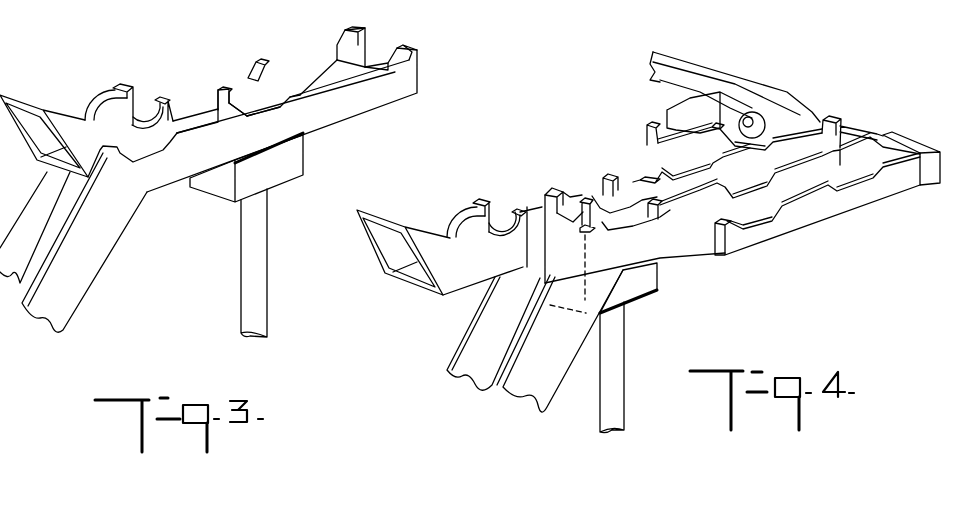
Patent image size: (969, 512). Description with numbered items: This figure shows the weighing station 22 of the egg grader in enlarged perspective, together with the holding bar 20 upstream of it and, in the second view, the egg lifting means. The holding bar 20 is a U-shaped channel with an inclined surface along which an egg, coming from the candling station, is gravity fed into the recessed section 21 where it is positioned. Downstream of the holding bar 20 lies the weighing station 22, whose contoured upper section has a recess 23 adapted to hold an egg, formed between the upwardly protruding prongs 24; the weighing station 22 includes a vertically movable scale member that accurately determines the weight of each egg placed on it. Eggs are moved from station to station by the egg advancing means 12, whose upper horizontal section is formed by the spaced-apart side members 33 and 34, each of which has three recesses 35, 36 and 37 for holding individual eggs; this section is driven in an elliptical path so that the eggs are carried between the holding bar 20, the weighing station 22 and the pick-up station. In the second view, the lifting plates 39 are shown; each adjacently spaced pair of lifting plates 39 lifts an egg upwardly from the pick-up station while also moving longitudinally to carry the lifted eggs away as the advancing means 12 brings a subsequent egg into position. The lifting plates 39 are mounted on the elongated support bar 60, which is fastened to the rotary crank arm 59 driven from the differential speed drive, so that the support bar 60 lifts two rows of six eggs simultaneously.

In FIG. 3, the egg advancing means 12 is at (388, 42).
In FIG. 4, the egg advancing means 12 is at (697, 236).
In FIG. 3, the holding bar 20 is at (35, 98).
In FIG. 4, the holding bar 20 is at (380, 217).
In FIG. 3, the recessed section 21 is at (100, 118).
In FIG. 4, the recessed section 21 is at (453, 233).
In FIG. 3, the weighing station 22 is at (308, 157).
In FIG. 4, the weighing station 22 is at (663, 282).
In FIG. 3, the recess 23 is at (226, 88).
In FIG. 4, the recess 23 is at (588, 198).
In FIG. 3, the upwardly protruding prongs 24 is at (260, 60).
In FIG. 4, the upwardly protruding prongs 24 is at (572, 202).
In FIG. 3, the side member 33 is at (418, 73).
In FIG. 3, the side member 34 is at (367, 32).
In FIG. 3, the recess 35 is at (152, 147).
In FIG. 3, the recess 36 is at (265, 118).
In FIG. 3, the recess 37 is at (320, 52).
In FIG. 4, the lifting plate 39 is at (830, 213).
In FIG. 4, the crank arm 59 is at (697, 65).
In FIG. 4, the support bar 60 is at (863, 130).